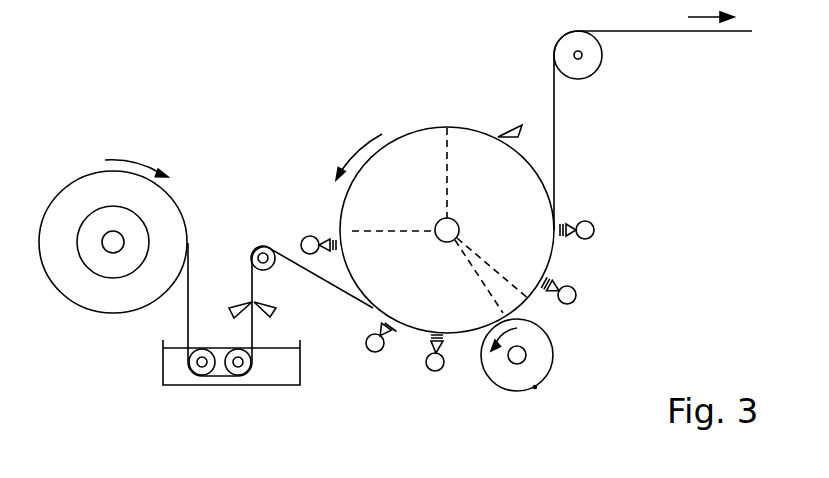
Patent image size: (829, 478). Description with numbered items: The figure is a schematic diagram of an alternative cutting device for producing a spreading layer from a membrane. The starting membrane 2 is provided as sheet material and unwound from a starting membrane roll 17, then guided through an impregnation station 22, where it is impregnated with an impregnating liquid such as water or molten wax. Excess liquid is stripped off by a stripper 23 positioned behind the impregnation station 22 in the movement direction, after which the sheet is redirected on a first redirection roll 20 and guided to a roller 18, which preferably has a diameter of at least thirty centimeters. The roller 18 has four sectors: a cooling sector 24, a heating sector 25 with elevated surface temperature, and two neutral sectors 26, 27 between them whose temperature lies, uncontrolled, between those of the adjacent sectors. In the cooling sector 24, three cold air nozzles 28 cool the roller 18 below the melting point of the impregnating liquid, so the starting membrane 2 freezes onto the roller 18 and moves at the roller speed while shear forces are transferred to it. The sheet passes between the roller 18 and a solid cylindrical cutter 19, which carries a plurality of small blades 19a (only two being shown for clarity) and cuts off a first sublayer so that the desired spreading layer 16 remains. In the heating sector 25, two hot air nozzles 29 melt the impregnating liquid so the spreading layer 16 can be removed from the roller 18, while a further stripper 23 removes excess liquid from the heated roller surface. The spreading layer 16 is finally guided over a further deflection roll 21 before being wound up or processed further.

The starting membrane 2 is at (186, 308).
The spreading layer 16 is at (722, 33).
The starting membrane roll 17 is at (78, 192).
The roller 18 is at (415, 126).
The solid cylindrical cutter 19 is at (544, 362).
The small blades 19a is at (535, 389).
The first redirection roll 20 is at (258, 245).
The further deflection roll 21 is at (587, 65).
The impregnation station 22 is at (278, 368).
The stripper 23 is at (232, 305).
The cooling sector 24 is at (398, 290).
The heating sector 25 is at (495, 217).
The neutral sector 26 is at (395, 200).
The neutral sector 27 is at (515, 304).
The cold air nozzle 28 is at (305, 237).
The hot air nozzle 29 is at (585, 298).